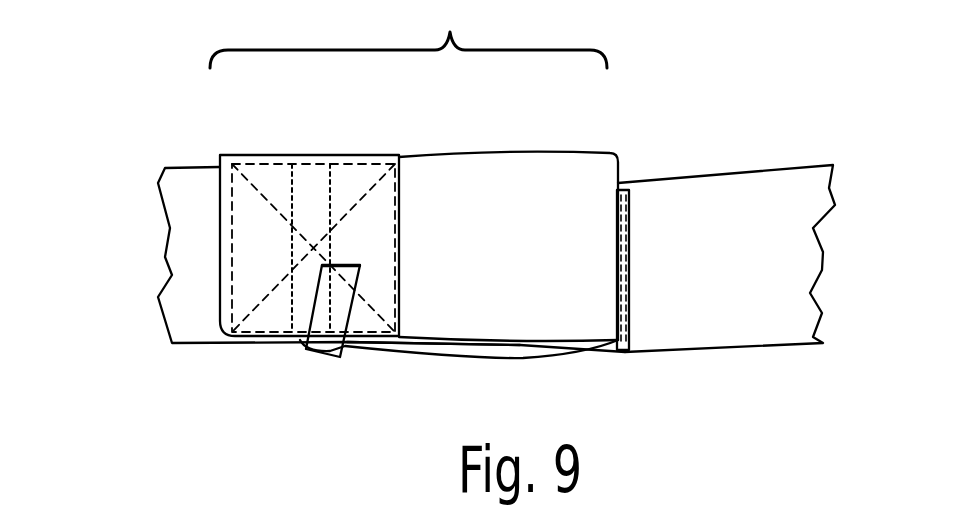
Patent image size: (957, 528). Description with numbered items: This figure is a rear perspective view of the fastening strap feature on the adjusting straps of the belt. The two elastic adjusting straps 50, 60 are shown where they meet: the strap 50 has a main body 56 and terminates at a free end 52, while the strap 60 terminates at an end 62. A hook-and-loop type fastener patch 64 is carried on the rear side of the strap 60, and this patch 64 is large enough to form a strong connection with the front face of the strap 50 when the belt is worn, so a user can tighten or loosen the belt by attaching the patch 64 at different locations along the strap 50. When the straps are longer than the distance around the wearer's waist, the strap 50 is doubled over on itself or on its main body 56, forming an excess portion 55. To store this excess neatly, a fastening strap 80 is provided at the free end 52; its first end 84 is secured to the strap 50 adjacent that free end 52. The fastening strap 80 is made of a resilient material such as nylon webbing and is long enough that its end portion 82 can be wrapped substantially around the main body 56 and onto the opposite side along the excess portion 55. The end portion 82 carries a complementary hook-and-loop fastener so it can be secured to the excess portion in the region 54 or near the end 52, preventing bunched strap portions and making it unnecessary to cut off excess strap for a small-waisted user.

The adjusting strap 50 is at (172, 228).
The end 52 is at (220, 155).
The region 54 is at (378, 166).
The excess portion 55 is at (408, 34).
The main body 56 is at (380, 347).
The adjusting strap 60 is at (822, 250).
The end 62 is at (467, 358).
The patch 64 is at (624, 352).
The fastening strap 80 is at (320, 353).
The end portion 82 is at (360, 277).
The first end of the fastening strap 84 is at (298, 157).